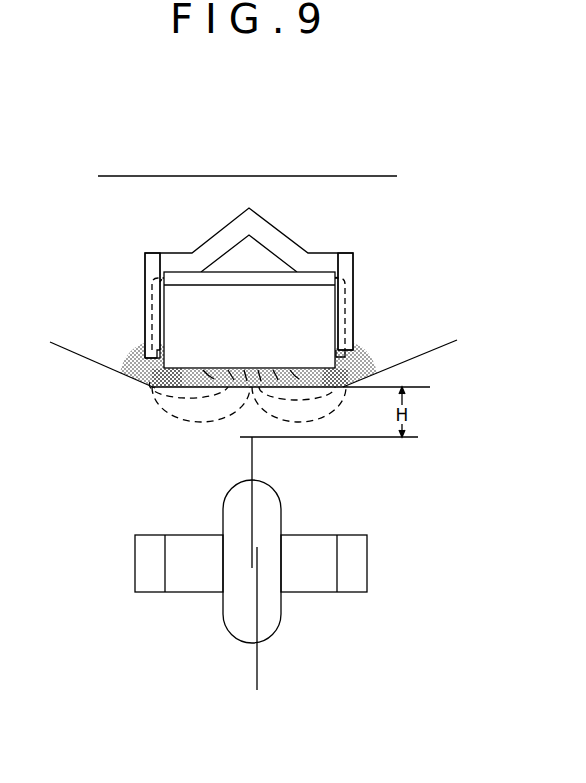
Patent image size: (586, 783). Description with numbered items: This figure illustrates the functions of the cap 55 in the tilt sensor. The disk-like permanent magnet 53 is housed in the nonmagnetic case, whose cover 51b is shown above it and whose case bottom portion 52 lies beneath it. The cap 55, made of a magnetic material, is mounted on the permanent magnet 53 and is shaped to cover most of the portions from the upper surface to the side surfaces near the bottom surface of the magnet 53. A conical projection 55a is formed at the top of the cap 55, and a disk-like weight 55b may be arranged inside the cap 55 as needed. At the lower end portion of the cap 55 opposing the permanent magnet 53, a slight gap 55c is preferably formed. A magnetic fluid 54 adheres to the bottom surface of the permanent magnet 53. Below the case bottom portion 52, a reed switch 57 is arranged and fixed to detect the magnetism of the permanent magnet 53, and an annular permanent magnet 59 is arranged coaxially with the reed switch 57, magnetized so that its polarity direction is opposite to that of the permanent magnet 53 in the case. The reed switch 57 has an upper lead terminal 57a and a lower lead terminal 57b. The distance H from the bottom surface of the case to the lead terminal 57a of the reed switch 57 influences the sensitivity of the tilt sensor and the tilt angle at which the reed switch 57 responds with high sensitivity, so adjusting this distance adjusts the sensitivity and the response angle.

The cover 51b is at (339, 176).
The case bottom portion 52 is at (430, 352).
The permanent magnet 53 is at (320, 313).
The magnetic fluid 54 is at (124, 352).
The cap 55 is at (164, 253).
The conical projection 55a is at (275, 231).
The weight 55b is at (328, 276).
The gap 55c is at (163, 350).
The reed switch 57 is at (281, 505).
The lead terminal 57a is at (248, 452).
The lower lead 57b is at (258, 676).
The annular permanent magnet 59 is at (135, 545).